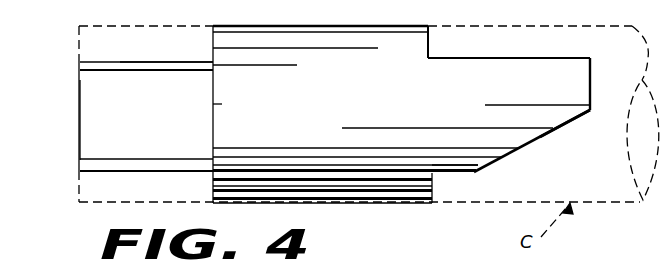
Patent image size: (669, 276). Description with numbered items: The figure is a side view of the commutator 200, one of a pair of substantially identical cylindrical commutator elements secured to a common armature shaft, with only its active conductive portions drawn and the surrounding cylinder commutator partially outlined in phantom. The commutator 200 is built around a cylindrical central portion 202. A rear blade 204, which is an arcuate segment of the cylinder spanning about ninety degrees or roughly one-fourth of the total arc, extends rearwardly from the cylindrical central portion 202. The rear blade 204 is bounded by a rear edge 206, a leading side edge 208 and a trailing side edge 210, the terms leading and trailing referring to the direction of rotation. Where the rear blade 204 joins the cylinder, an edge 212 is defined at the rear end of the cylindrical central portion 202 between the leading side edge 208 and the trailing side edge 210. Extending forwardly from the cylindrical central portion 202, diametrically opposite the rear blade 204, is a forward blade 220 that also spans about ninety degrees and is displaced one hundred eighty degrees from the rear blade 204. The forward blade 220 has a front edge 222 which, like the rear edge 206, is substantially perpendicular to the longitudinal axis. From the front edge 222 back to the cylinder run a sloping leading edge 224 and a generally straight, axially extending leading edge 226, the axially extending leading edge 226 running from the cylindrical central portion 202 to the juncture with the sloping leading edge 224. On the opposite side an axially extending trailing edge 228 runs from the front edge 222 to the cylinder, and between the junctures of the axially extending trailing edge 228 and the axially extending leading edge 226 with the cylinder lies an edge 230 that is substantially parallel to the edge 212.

The commutator 200 is at (491, 53).
The cylindrical central portion 202 is at (380, 206).
The rear blade 204 is at (80, 92).
The rear edge 206 is at (80, 122).
The leading side edge 208 is at (127, 65).
The trailing side edge 210 is at (125, 173).
The edge 212 is at (213, 182).
The forward blade 220 is at (514, 138).
The front edge 222 is at (592, 76).
The sloping leading edge 224 is at (552, 133).
The axially extending leading edge 226 is at (452, 173).
The axially extending trailing edge 228 is at (567, 58).
The edge 230 is at (430, 35).